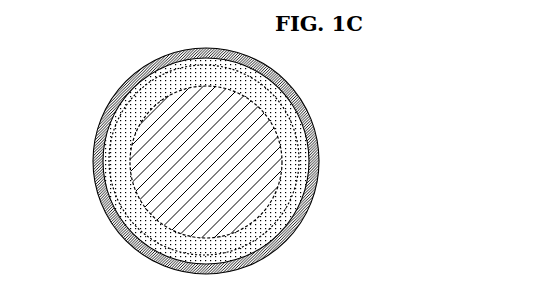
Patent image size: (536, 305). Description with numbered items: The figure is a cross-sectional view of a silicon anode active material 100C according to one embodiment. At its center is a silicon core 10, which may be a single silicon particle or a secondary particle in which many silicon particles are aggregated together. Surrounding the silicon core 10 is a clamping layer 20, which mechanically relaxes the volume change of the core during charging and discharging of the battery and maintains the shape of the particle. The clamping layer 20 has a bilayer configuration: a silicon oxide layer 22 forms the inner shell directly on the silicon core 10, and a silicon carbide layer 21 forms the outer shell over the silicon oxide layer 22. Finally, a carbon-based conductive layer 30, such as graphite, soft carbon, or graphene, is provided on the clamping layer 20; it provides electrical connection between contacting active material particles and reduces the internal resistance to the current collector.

The silicon anode active material 100C is at (223, 160).
The silicon core 10 is at (252, 204).
The clamping layer 20 is at (253, 161).
The silicon carbide layer 21 is at (303, 149).
The silicon oxide layer 22 is at (292, 181).
The carbon-based conductive layer 30 is at (312, 113).